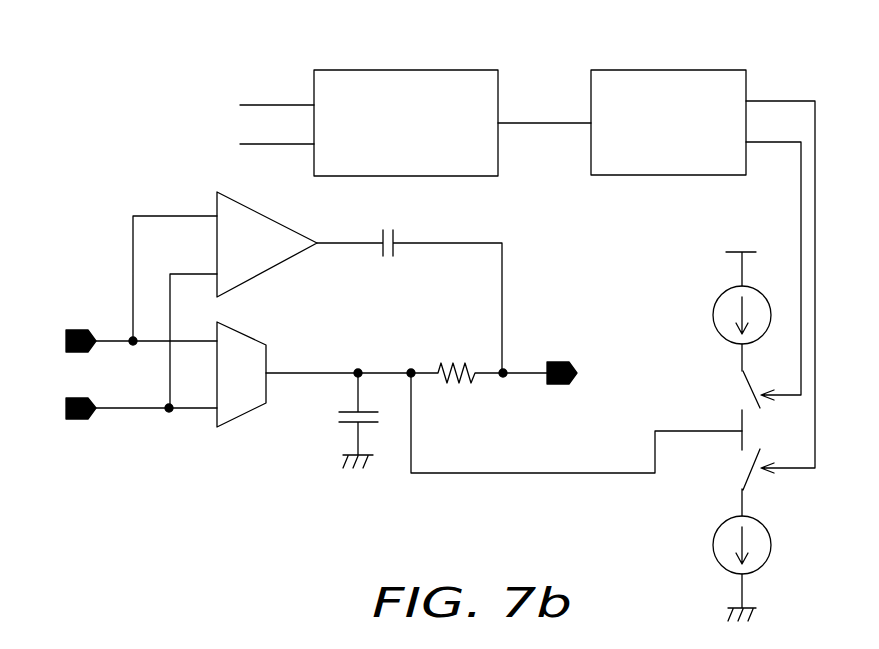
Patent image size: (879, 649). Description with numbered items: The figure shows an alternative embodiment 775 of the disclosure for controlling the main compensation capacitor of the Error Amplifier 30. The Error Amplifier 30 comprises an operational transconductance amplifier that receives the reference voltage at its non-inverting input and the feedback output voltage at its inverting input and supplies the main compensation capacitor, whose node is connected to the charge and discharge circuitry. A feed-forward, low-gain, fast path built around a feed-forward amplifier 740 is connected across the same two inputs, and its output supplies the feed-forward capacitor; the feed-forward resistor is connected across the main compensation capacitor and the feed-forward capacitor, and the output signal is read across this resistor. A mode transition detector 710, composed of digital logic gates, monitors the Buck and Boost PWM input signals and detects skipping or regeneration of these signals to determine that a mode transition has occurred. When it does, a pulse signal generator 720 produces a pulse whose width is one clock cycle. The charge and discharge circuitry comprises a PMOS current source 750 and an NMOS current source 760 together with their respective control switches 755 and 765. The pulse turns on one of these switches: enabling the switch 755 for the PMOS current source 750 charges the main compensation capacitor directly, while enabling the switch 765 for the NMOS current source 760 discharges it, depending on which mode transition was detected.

The alternative embodiment 775 is at (222, 46).
The mode transition detector 710 is at (430, 70).
The pulse signal generator 720 is at (678, 70).
The feed-forward amplifier 740 is at (270, 268).
The error amplifier 30 is at (252, 412).
The PMOS current source 750 is at (714, 314).
The control switch for PMOS current source 755 is at (738, 396).
The NMOS current source 760 is at (713, 544).
The control switch for NMOS current source 765 is at (753, 488).